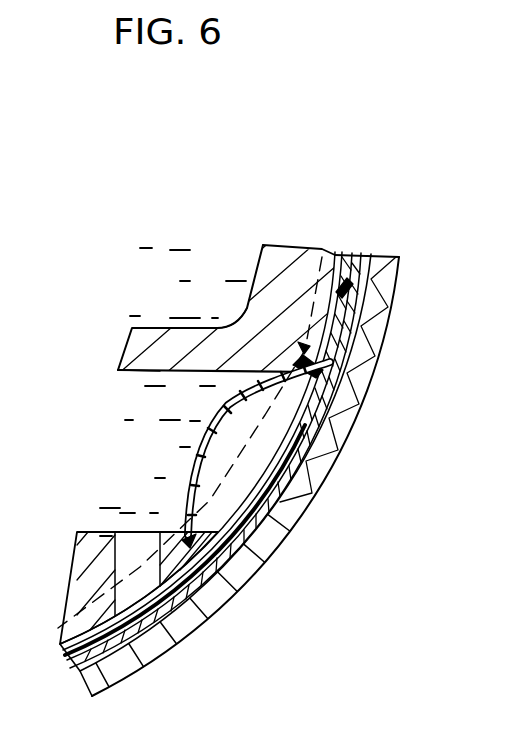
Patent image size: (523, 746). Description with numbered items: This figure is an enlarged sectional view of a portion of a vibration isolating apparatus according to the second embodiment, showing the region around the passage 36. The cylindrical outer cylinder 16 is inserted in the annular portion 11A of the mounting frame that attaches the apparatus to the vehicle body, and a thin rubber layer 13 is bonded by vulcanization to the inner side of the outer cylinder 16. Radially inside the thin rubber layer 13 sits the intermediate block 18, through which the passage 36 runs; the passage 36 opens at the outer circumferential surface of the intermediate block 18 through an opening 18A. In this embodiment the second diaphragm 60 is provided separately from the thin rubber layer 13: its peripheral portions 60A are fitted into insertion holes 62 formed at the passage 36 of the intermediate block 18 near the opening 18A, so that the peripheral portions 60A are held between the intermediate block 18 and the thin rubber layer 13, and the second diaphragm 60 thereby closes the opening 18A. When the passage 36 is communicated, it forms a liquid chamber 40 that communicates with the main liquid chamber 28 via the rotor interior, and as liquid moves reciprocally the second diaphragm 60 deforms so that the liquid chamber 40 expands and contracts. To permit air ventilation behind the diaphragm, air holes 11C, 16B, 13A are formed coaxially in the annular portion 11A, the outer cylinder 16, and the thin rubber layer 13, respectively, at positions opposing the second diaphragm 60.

The annular portion 11A is at (266, 562).
The air hole 11C is at (315, 482).
The thin rubber layer 13 is at (350, 254).
The air hole 13A is at (297, 520).
The outer cylinder 16 is at (350, 287).
The air hole 16B is at (297, 497).
The intermediate block 18 is at (308, 306).
The opening 18A is at (247, 312).
The main liquid chamber 28 is at (239, 268).
The passage 36 is at (136, 372).
The liquid chamber 40 is at (160, 460).
The second diaphragm 60 is at (221, 403).
The peripheral portions 60A is at (285, 352).
The insertion holes 62 is at (178, 523).